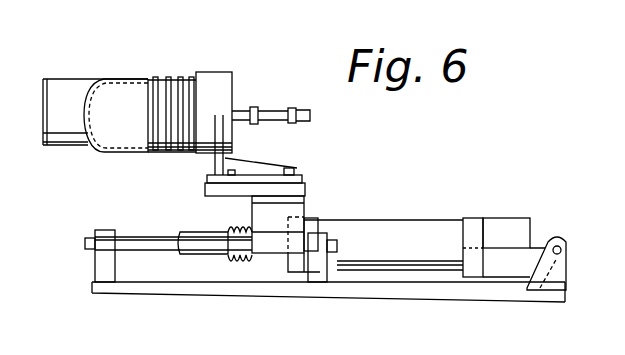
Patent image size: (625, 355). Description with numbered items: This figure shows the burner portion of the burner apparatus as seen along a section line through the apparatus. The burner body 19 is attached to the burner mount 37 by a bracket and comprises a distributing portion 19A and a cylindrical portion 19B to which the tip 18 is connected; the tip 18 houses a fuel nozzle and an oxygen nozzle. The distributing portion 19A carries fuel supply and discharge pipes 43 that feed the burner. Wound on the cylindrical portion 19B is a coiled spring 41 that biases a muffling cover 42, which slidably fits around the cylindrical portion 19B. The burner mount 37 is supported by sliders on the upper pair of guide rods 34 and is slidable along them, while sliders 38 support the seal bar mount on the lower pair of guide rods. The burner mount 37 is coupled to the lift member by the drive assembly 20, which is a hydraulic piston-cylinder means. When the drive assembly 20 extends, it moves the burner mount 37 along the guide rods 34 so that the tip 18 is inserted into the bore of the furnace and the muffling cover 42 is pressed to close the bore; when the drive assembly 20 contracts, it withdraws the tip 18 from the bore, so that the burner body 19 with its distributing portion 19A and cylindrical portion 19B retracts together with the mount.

The tip 18 is at (55, 148).
The muffling cover 42 is at (105, 85).
The coiled spring 41 is at (180, 78).
The distributing portion 19A is at (215, 78).
The burner body 19 is at (240, 72).
The cylindrical portion 19B is at (160, 152).
The fuel supply and discharge pipes 43 is at (272, 110).
The burner mount 37 is at (258, 176).
The sliders 38 is at (272, 255).
The guide rods 34 is at (148, 240).
The drive assembly 20 is at (420, 228).